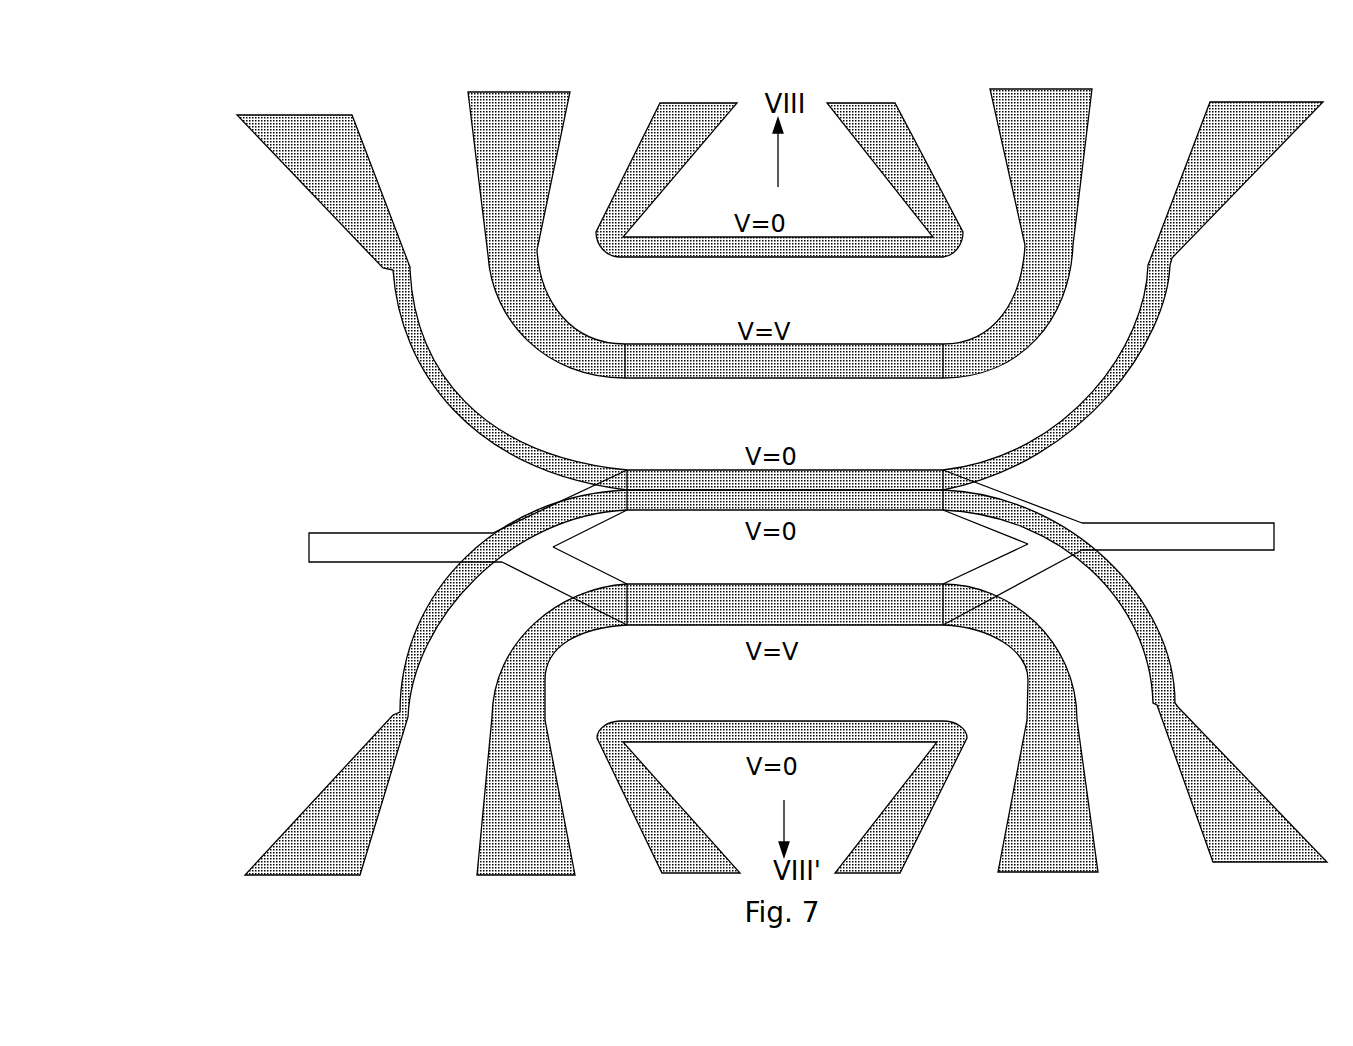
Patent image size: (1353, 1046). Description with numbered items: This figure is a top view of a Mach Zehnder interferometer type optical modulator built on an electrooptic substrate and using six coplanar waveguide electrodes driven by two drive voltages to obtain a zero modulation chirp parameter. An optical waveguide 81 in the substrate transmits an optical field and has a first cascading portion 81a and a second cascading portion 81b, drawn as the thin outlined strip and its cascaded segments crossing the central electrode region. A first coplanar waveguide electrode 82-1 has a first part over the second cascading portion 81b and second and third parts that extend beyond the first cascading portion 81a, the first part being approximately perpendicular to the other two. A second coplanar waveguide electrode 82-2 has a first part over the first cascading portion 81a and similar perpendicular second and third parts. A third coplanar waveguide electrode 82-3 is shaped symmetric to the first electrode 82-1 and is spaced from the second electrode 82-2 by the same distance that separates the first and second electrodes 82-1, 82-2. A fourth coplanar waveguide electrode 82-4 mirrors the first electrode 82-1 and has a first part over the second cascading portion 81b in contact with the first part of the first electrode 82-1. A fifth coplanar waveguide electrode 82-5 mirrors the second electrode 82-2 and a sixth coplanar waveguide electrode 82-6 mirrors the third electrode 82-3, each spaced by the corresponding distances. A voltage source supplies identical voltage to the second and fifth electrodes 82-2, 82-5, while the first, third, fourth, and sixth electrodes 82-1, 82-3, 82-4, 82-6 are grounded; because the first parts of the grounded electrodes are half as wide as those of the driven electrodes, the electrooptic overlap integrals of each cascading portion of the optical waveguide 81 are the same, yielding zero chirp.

The optical waveguide 81 is at (320, 563).
The first cascading portion 81a is at (550, 567).
The second cascading portion 81b is at (570, 528).
The first coplanar waveguide electrode 82-1 is at (830, 497).
The second coplanar waveguide electrode 82-2 is at (843, 604).
The third coplanar waveguide electrode 82-3 is at (832, 732).
The fourth coplanar waveguide electrode 82-4 is at (830, 478).
The fifth coplanar waveguide electrode 82-5 is at (818, 363).
The sixth coplanar waveguide electrode 82-6 is at (808, 245).